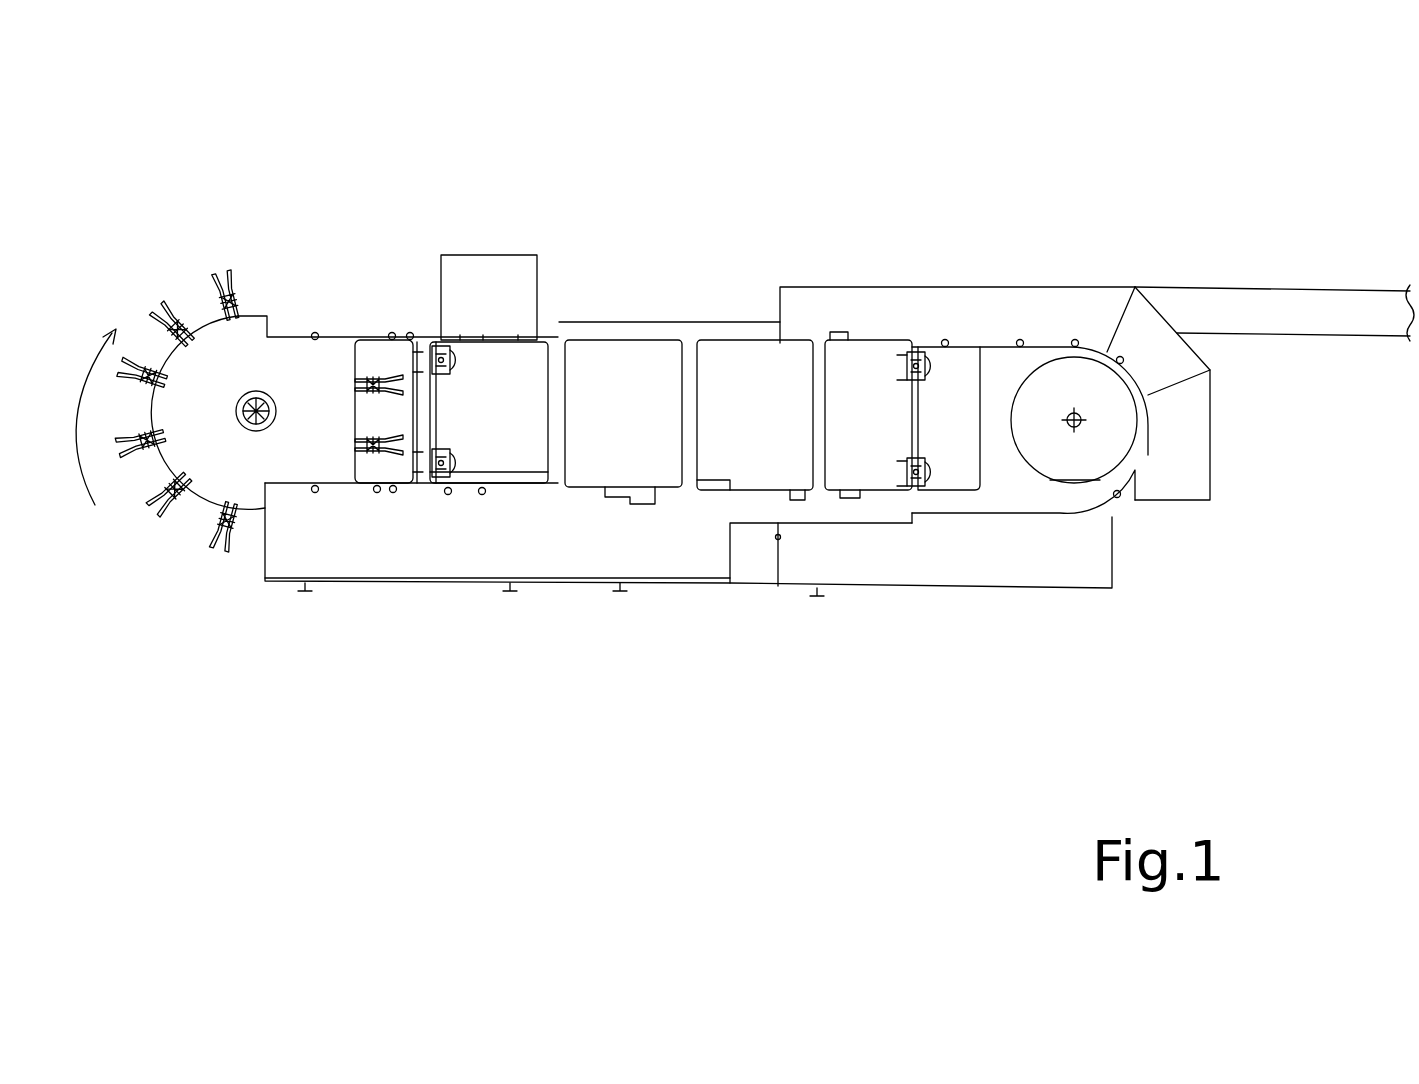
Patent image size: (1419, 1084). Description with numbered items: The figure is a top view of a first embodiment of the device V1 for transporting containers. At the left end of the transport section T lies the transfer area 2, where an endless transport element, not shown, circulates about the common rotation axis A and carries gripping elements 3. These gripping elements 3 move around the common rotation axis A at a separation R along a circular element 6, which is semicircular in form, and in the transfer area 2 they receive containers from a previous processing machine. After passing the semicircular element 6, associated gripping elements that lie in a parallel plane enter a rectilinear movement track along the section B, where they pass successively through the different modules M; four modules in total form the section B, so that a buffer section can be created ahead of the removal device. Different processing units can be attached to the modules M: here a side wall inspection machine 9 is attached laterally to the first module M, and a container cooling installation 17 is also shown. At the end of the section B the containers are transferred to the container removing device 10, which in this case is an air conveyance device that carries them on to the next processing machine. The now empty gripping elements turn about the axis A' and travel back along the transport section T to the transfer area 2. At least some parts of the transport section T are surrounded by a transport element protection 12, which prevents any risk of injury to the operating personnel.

The transfer area 2 is at (215, 478).
The gripping elements 3 is at (235, 284).
The circular element 6 is at (212, 323).
The side wall inspection machine 9 is at (498, 310).
The container removing device 10 is at (1233, 310).
The transport element protection 12 is at (1003, 312).
The container cooling installation 17 is at (612, 355).
The common rotation axis A is at (292, 372).
The axis A' is at (1173, 427).
The separation R is at (237, 420).
The modules M is at (912, 653).
The section B is at (912, 640).
The transport section T is at (160, 405).
The device V1 is at (348, 322).